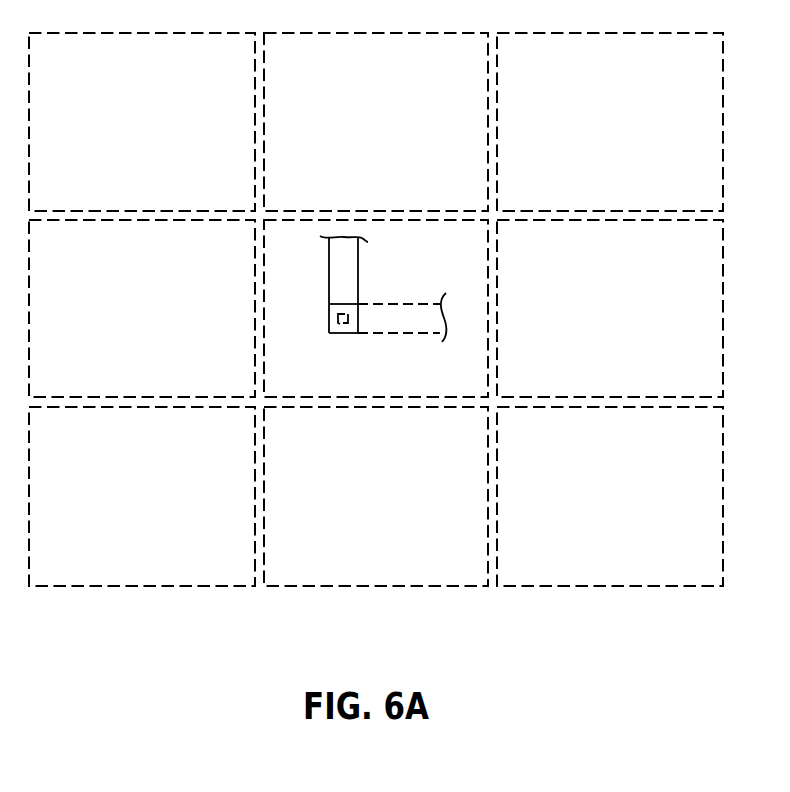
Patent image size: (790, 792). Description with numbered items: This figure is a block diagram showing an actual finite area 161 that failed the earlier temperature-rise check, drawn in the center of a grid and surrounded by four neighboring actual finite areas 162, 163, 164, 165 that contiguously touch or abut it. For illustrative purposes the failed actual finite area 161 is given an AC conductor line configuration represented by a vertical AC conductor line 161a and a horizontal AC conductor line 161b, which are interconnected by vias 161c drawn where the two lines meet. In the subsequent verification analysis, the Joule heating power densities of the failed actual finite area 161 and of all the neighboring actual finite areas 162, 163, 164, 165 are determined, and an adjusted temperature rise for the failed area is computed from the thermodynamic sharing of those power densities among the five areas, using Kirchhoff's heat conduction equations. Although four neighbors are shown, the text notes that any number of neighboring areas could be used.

The actual finite area 161 is at (441, 250).
The AC conductor line 161a is at (358, 265).
The AC conductor line 161b is at (393, 333).
The vias 161c is at (338, 333).
The neighboring actual finite area 162 is at (441, 64).
The neighboring actual finite area 163 is at (674, 250).
The neighboring actual finite area 164 is at (441, 437).
The neighboring actual finite area 165 is at (206, 250).